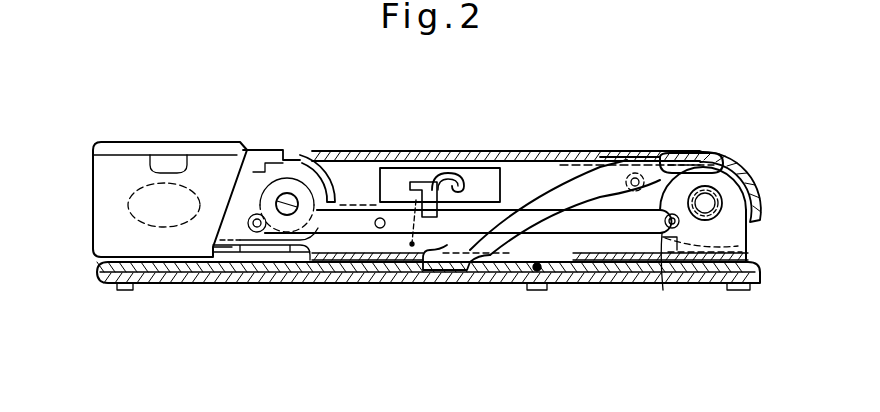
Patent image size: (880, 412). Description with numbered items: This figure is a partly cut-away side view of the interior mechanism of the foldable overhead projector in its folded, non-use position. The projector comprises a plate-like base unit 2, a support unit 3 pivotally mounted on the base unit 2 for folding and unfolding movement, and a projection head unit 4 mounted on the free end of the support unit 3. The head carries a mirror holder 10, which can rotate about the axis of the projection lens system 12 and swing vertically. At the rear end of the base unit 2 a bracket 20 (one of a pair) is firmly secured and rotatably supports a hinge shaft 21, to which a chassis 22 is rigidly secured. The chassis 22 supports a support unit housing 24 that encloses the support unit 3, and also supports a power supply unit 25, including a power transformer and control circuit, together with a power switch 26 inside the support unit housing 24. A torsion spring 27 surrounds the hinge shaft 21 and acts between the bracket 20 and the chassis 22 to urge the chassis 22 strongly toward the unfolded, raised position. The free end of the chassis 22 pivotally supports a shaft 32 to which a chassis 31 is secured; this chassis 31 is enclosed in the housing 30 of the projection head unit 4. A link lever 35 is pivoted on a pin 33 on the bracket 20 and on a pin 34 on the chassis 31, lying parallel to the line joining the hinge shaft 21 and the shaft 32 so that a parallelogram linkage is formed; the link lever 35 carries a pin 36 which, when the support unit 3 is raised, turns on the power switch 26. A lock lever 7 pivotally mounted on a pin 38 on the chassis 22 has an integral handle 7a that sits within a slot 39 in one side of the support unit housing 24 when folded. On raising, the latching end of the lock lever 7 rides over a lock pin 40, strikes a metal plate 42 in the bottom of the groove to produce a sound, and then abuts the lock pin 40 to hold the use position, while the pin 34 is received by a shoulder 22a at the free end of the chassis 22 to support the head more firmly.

The base unit 2 is at (181, 294).
The support unit 3 is at (468, 140).
The projection head unit 4 is at (191, 130).
The lock lever 7 is at (500, 275).
The handle 7a is at (717, 157).
The mirror holder 10 is at (149, 141).
The projection lens system 12 is at (128, 192).
The bracket 20 is at (743, 238).
The hinge shaft 21 is at (759, 205).
The chassis 22 is at (531, 168).
The shoulder 22a is at (291, 275).
The support unit housing 24 is at (585, 151).
The power supply unit 25 is at (388, 167).
The power switch 26 is at (427, 180).
The torsion spring 27 is at (715, 190).
The housing 30 is at (270, 149).
The chassis 31 is at (238, 200).
The shaft 32 is at (291, 192).
The pin 33 is at (668, 234).
The pin 34 is at (266, 275).
The link lever 35 is at (588, 224).
The pin 36 is at (378, 231).
The pin 38 is at (634, 192).
The slot 39 is at (627, 152).
The lock pin 40 is at (538, 291).
The metal plate 42 is at (420, 272).